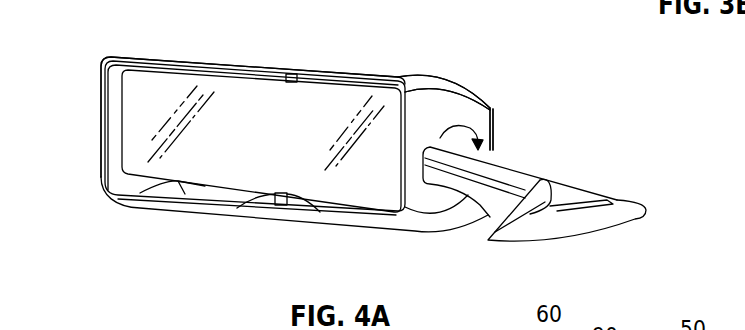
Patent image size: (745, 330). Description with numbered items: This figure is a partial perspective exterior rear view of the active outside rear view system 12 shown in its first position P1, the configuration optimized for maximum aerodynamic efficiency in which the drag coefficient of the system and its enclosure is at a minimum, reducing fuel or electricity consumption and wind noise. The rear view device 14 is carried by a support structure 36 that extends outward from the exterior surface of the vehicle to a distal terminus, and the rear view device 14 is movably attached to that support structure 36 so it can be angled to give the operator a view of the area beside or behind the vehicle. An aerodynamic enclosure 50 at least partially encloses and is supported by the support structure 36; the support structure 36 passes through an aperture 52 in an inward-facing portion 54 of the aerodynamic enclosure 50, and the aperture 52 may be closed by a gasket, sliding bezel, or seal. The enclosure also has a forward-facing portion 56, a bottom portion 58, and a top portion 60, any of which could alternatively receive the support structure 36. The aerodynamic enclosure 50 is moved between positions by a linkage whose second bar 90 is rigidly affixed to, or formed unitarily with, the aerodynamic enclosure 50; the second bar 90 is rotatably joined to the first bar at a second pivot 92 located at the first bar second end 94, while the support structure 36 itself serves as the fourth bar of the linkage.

The active outside rear view system 12 is at (586, 153).
The rear view device 14 is at (270, 139).
The support structure 36 is at (621, 193).
The aerodynamic enclosure 50 is at (389, 72).
The aperture 52 is at (487, 146).
The inward-facing portion 54 is at (440, 107).
The forward-facing portion 56 is at (497, 112).
The bottom portion 58 is at (283, 216).
The top portion 60 is at (205, 57).
The second bar 90 is at (291, 74).
The second pivot 92 is at (313, 207).
The first bar second end 94 is at (303, 203).
The first position P1 is at (534, 109).